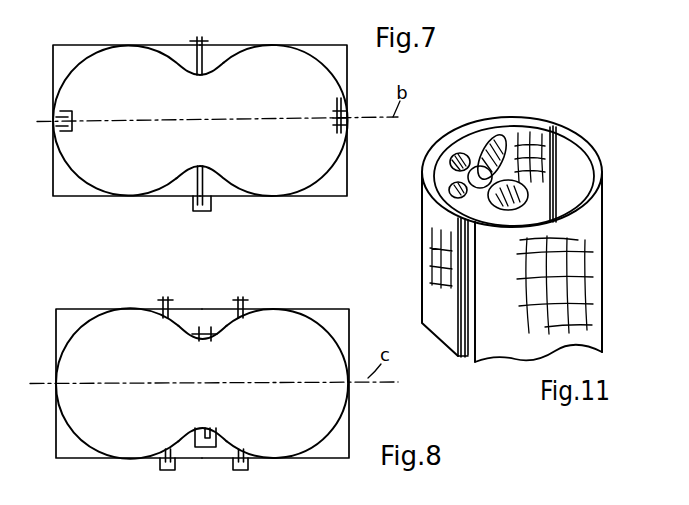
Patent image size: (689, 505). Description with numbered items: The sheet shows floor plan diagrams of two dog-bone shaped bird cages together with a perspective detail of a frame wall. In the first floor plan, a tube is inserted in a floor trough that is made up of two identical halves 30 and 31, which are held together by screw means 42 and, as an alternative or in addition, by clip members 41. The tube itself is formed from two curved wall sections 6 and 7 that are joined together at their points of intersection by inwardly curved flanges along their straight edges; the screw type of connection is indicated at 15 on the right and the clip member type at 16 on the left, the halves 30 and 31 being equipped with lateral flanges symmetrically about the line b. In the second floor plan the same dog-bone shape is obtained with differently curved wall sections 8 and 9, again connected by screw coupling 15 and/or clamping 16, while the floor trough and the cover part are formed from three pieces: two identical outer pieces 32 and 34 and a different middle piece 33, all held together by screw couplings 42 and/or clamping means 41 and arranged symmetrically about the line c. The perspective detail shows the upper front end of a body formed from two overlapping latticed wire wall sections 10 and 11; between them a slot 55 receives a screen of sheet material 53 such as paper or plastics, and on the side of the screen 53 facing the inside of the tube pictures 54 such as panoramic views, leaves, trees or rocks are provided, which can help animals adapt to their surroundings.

In FIG. 7, the floor trough half 30 is at (72, 57).
In FIG. 7, the floor trough half 31 is at (326, 52).
In FIG. 7, the curved wall section 6 is at (172, 60).
In FIG. 7, the curved wall section 7 is at (225, 181).
In FIG. 7, the screw means 42 is at (208, 40).
In FIG. 8, the screw means 42 is at (160, 300).
In FIG. 7, the clip member 41 is at (193, 205).
In FIG. 8, the clip member 41 is at (160, 468).
In FIG. 7, the clip connection 16 is at (63, 132).
In FIG. 8, the clip connection 16 is at (200, 448).
In FIG. 7, the screw coupling 15 is at (348, 130).
In FIG. 8, the screw coupling 15 is at (212, 330).
In FIG. 8, the outer trough piece 32 is at (58, 340).
In FIG. 8, the outer trough piece 34 is at (337, 321).
In FIG. 8, the wall section 8 is at (85, 325).
In FIG. 8, the wall section 9 is at (318, 441).
In FIG. 8, the middle trough piece 33 is at (193, 320).
In FIG. 11, the wall section 10 is at (457, 137).
In FIG. 11, the wall section 11 is at (505, 118).
In FIG. 11, the sheet material screen 53 is at (560, 148).
In FIG. 11, the pictures 54 is at (452, 182).
In FIG. 11, the slot 55 is at (467, 357).